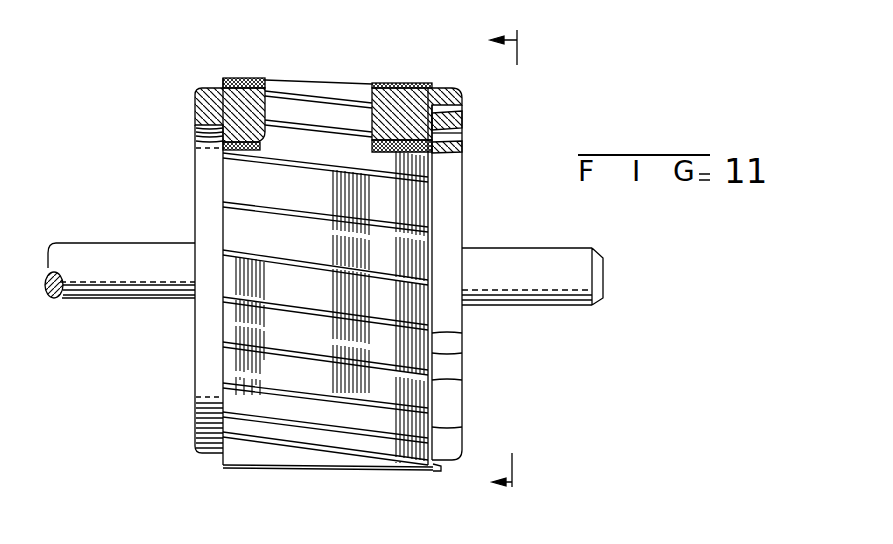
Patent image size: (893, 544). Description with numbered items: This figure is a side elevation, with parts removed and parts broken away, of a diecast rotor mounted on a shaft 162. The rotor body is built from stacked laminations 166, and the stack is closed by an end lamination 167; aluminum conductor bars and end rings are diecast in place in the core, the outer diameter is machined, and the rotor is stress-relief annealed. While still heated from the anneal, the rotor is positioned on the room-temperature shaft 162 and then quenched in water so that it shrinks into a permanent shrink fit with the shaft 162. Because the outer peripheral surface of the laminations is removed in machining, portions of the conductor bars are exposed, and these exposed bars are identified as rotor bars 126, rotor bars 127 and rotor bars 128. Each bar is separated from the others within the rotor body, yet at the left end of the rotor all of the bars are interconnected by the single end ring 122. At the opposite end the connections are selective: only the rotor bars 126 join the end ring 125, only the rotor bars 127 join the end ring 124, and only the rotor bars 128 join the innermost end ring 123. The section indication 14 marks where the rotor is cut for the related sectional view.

The section line 14- 14 is at (491, 261).
The end ring 122 is at (206, 106).
The innermost end ring 123 is at (452, 149).
The end ring 124 is at (437, 130).
The end ring 125 is at (454, 97).
The rotor bars 126 is at (350, 83).
The rotor bars 127 is at (292, 110).
The rotor bars 128 is at (300, 97).
The shaft 162 is at (122, 252).
The laminations 166 is at (318, 457).
The end lamination 167 is at (438, 470).